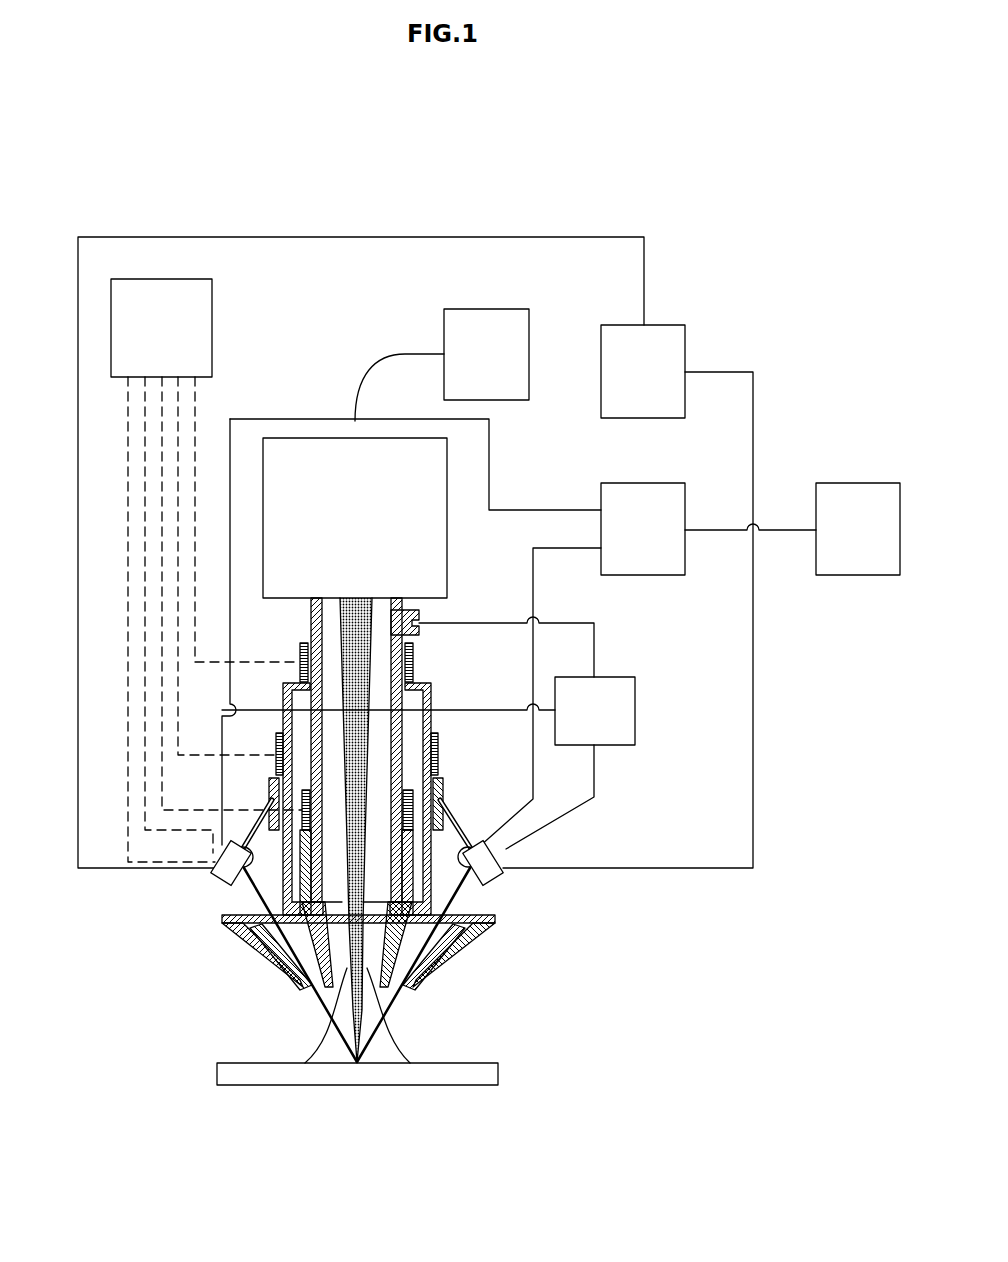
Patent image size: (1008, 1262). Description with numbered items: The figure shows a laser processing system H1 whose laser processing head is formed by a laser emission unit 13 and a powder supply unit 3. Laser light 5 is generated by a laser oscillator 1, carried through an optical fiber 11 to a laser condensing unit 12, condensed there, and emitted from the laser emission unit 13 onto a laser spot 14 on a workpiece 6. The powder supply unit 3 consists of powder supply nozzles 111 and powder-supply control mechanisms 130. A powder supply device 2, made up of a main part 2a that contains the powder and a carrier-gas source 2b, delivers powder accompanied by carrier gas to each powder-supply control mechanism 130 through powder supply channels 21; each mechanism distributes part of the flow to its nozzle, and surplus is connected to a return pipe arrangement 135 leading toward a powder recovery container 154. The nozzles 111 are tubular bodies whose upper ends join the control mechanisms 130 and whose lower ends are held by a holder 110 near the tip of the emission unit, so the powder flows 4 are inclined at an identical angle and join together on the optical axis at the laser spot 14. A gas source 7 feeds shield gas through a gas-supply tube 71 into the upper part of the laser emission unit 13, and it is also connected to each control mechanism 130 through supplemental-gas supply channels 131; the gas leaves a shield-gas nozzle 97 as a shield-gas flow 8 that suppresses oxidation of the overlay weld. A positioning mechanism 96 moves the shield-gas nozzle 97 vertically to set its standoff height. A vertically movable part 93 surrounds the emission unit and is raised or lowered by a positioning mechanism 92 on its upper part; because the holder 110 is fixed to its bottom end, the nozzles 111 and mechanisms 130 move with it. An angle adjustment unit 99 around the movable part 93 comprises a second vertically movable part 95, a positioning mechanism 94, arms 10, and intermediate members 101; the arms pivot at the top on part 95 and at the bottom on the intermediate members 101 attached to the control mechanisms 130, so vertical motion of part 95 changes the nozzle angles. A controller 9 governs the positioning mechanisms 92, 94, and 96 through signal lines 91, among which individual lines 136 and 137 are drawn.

The laser welding head H1 is at (565, 152).
The return pipe arrangement 135 is at (383, 237).
The controller 9 is at (212, 318).
The signal lines 91 is at (165, 428).
The control signal line 137 is at (128, 445).
The control signal line 136 is at (145, 490).
The laser oscillator 1 is at (500, 309).
The optical fiber 11 is at (416, 353).
The powder recovery container 154 is at (670, 325).
The laser condensing unit 12 is at (447, 545).
The powder supply channels 21 is at (490, 462).
The gas-supply tube 71 is at (595, 640).
The gas source 7 is at (636, 708).
The supplemental-gas supply channels 131 is at (503, 710).
The laser emission unit 13 is at (311, 617).
The laser light 5 is at (357, 1066).
The positioning mechanism 92 is at (414, 652).
The vertically movable part 93 is at (432, 692).
The positioning mechanism 94 is at (438, 744).
The vertically movable part 95 is at (444, 792).
The positioning mechanism 96 is at (269, 803).
The shield-gas nozzle 97 is at (425, 880).
The arms 10 is at (456, 806).
The intermediate members 101 is at (228, 873).
The powder-supply control mechanisms 130 is at (224, 882).
The angle adjustment unit 99 is at (484, 823).
The powder supply unit 3 is at (504, 884).
The holder 110 is at (478, 938).
The powder supply nozzles 111 is at (445, 965).
The powder flow 4 is at (320, 1008).
The shield-gas flow 8 is at (368, 1057).
The workpiece 6 is at (228, 1063).
The laser spot 14 is at (390, 1065).
The powder supply device 2 is at (750, 574).
The main part 2a is at (685, 558).
The carrier-gas source 2b is at (843, 575).